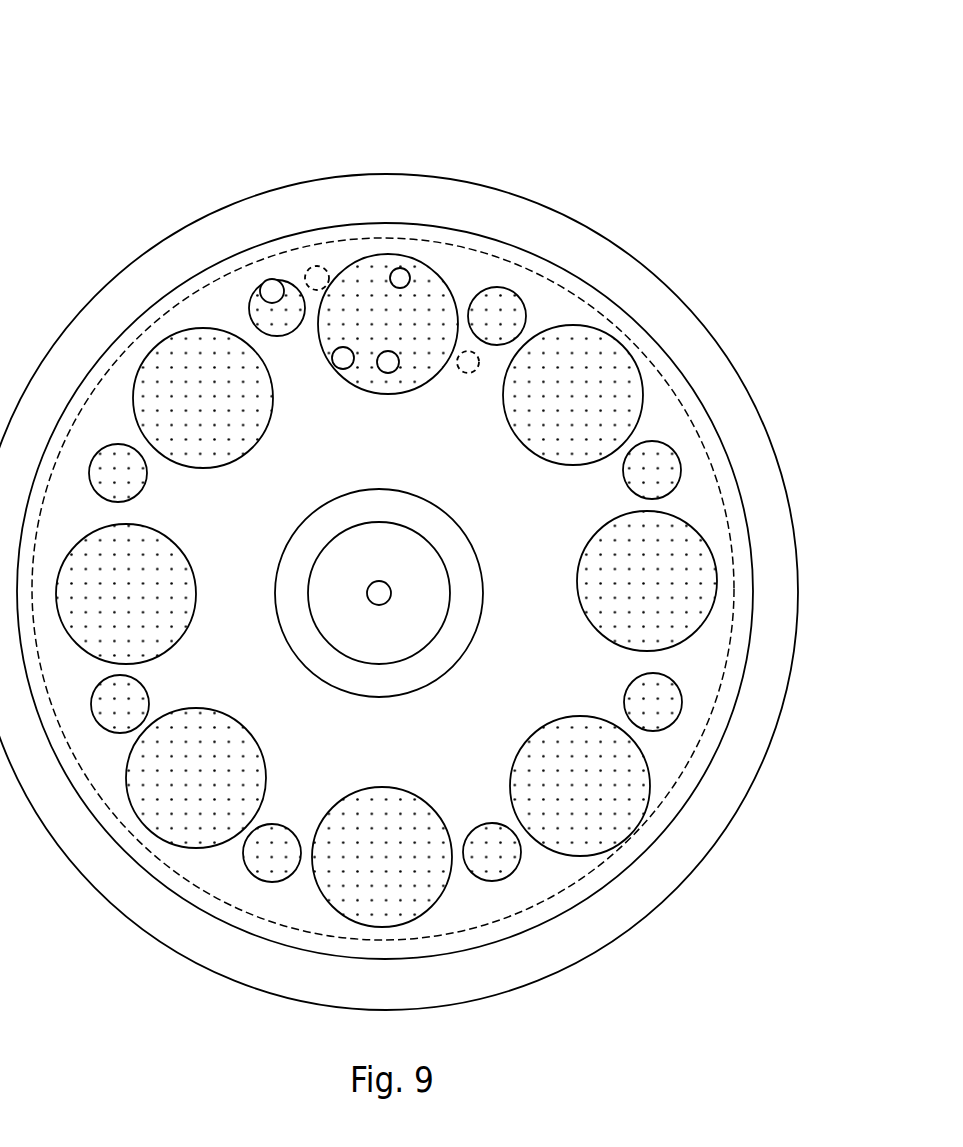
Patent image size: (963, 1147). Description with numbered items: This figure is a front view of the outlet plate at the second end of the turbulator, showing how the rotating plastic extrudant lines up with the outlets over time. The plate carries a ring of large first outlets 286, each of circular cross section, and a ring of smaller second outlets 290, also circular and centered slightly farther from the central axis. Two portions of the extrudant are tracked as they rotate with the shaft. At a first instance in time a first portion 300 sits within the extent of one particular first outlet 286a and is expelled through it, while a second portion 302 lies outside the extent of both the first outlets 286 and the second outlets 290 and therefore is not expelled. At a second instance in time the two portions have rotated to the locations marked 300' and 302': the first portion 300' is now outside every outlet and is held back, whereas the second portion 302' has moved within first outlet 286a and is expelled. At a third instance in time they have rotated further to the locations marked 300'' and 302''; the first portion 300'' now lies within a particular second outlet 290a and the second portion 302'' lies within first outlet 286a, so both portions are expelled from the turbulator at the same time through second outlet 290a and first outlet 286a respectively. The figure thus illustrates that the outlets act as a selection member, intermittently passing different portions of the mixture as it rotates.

The first outlets 286 is at (677, 592).
The first outlet 286a is at (435, 302).
The second outlets 290 is at (657, 706).
The second outlet 290a is at (284, 314).
The first portion of plastic extrudant 300 is at (540, 185).
The first portion at second location 300' is at (441, 225).
The first portion at third location 300'' is at (317, 178).
The second portion of plastic extrudant 302 is at (629, 300).
The second portion at second location 302' is at (567, 270).
The second portion at third location 302'' is at (501, 145).